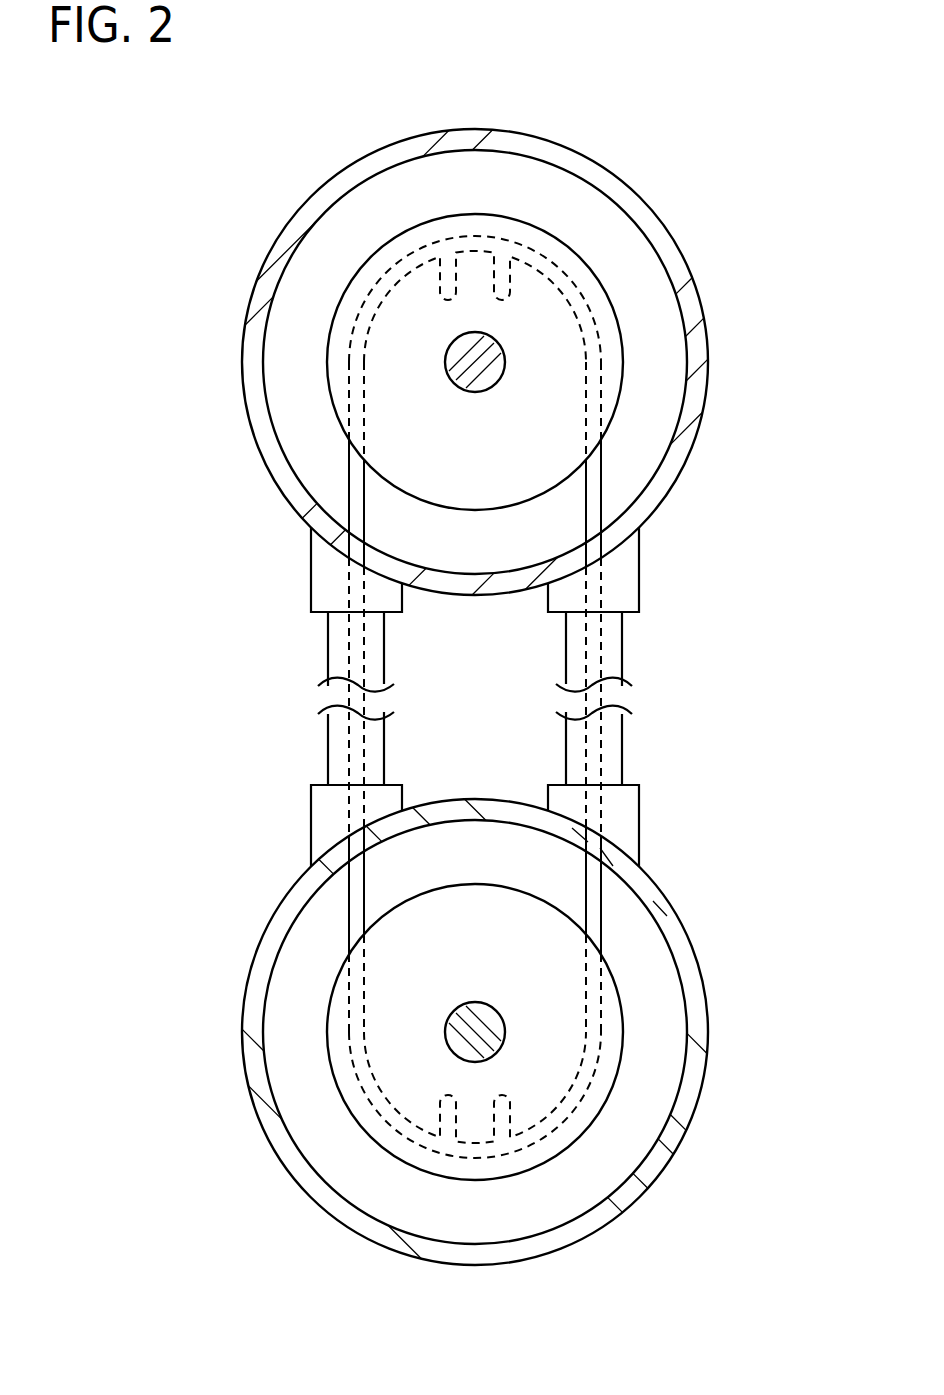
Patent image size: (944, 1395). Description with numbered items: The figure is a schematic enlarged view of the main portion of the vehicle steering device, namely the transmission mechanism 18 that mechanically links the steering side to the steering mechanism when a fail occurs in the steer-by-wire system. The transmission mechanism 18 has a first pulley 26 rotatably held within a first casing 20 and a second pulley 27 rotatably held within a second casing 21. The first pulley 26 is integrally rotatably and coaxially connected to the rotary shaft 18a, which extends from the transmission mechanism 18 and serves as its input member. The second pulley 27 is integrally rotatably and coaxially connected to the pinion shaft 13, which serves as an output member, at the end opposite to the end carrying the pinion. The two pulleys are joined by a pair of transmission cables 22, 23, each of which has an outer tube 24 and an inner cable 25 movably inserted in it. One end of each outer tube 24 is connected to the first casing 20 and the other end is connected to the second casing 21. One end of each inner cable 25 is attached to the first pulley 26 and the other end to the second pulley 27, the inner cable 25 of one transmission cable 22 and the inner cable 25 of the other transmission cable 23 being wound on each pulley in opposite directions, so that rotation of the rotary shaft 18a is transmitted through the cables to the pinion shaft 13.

The transmission mechanism 18 is at (427, 351).
The rotary shaft 18a is at (478, 363).
The first casing 20 is at (690, 308).
The second casing 21 is at (668, 1145).
The first pulley 26 is at (337, 344).
The second pulley 27 is at (337, 1049).
The pinion shaft 13 is at (478, 1033).
The transmission cable 22 is at (302, 646).
The transmission cable 23 is at (648, 646).
The outer tube 24 is at (338, 745).
The inner cable 25 is at (355, 905).